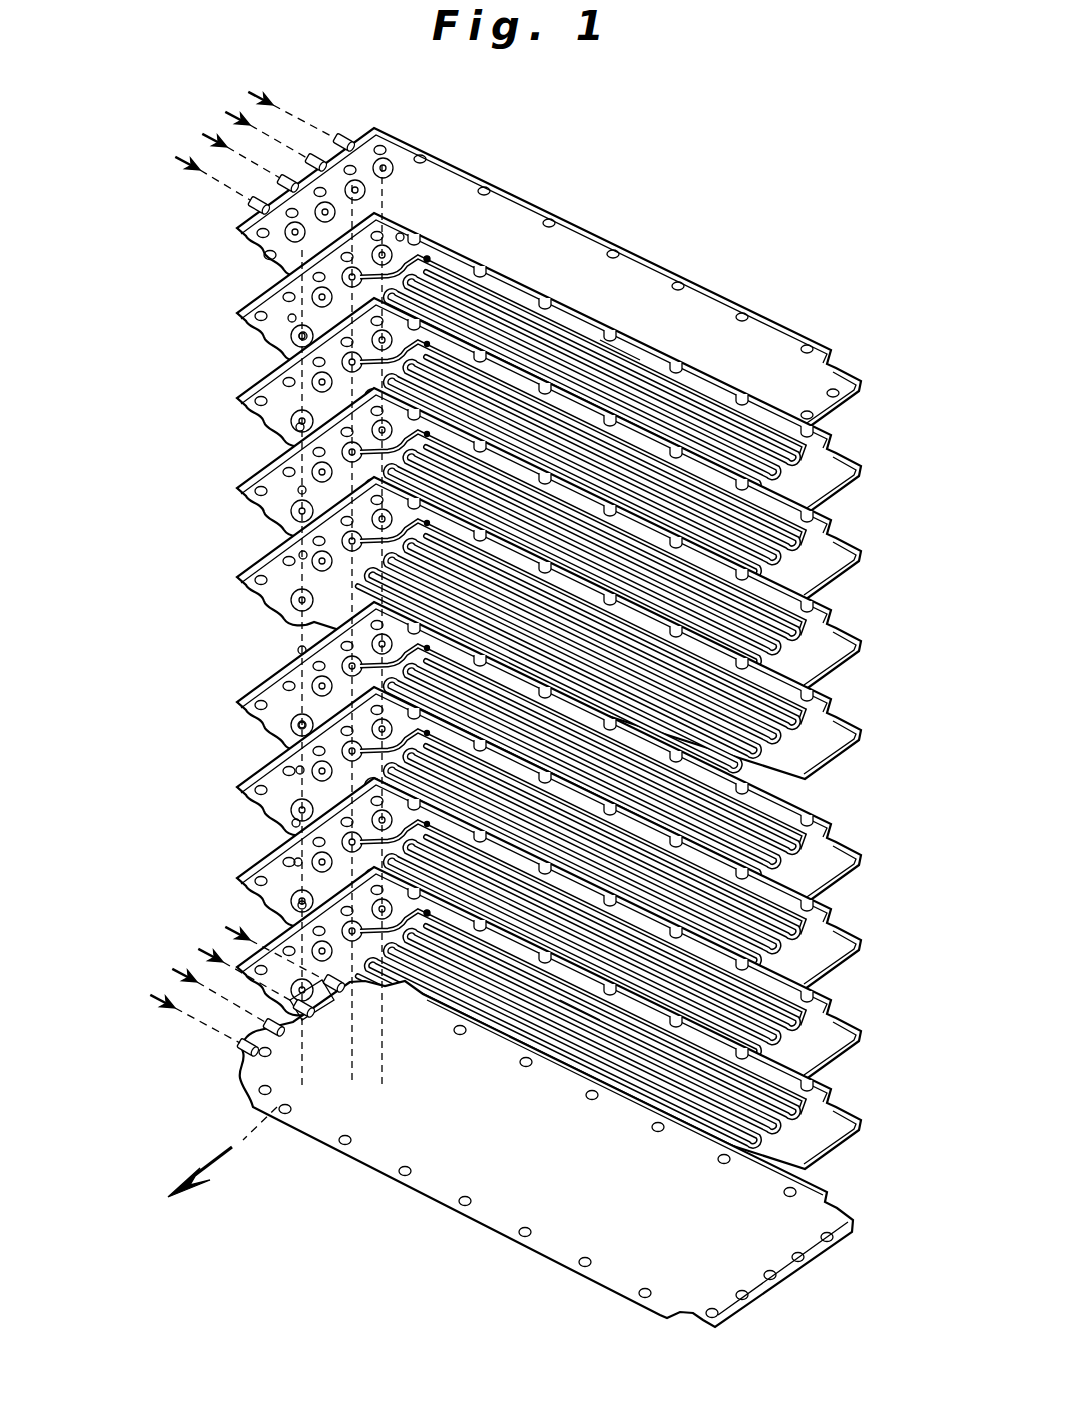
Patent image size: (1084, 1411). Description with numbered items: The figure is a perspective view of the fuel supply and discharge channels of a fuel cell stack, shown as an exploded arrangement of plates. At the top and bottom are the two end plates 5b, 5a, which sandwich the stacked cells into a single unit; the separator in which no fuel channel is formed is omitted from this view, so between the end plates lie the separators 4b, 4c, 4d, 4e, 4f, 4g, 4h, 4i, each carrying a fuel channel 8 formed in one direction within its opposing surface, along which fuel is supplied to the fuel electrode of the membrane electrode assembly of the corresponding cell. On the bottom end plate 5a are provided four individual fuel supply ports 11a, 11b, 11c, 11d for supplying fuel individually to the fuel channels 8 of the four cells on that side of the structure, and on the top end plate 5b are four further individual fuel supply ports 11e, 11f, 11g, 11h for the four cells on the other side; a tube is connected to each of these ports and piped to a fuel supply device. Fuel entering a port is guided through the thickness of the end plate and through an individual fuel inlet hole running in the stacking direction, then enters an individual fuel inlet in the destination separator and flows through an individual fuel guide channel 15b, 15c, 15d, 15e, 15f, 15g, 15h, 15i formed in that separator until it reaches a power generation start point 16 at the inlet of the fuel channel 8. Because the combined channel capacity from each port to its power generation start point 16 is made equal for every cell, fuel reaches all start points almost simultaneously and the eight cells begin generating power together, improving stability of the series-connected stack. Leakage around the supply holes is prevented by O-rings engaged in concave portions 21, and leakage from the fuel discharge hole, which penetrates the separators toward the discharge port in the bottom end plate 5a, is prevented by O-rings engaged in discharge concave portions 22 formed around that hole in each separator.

The separator 4b is at (838, 1112).
The separator 4c is at (838, 1023).
The separator 4d is at (838, 932).
The separator 4e is at (838, 847).
The separator 4f is at (838, 722).
The separator 4g is at (838, 633).
The separator 4h is at (838, 543).
The separator 4i is at (838, 458).
The bottom end plate 5a is at (845, 1203).
The top end plate 5b is at (812, 333).
The fuel channel 8 is at (603, 1010).
The individual fuel supply port 11a is at (242, 1058).
The individual fuel supply port 11b is at (263, 1027).
The individual fuel supply port 11c is at (312, 1020).
The individual fuel supply port 11d is at (340, 990).
The individual fuel supply port 11e is at (343, 142).
The individual fuel supply port 11f is at (315, 160).
The individual fuel supply port 11g is at (287, 178).
The individual fuel supply port 11h is at (252, 212).
The individual fuel guide channel 15b is at (302, 905).
The individual fuel guide channel 15c is at (300, 770).
The individual fuel guide channel 15d is at (302, 725).
The individual fuel guide channel 15e is at (302, 650).
The individual fuel guide channel 15f is at (303, 555).
The individual fuel guide channel 15g is at (302, 490).
The individual fuel guide channel 15h is at (303, 336).
The individual fuel guide channel 15i is at (400, 237).
The power generation start point 16 is at (430, 918).
The concave portion 21 is at (296, 823).
The discharge concave portion 22 is at (298, 862).